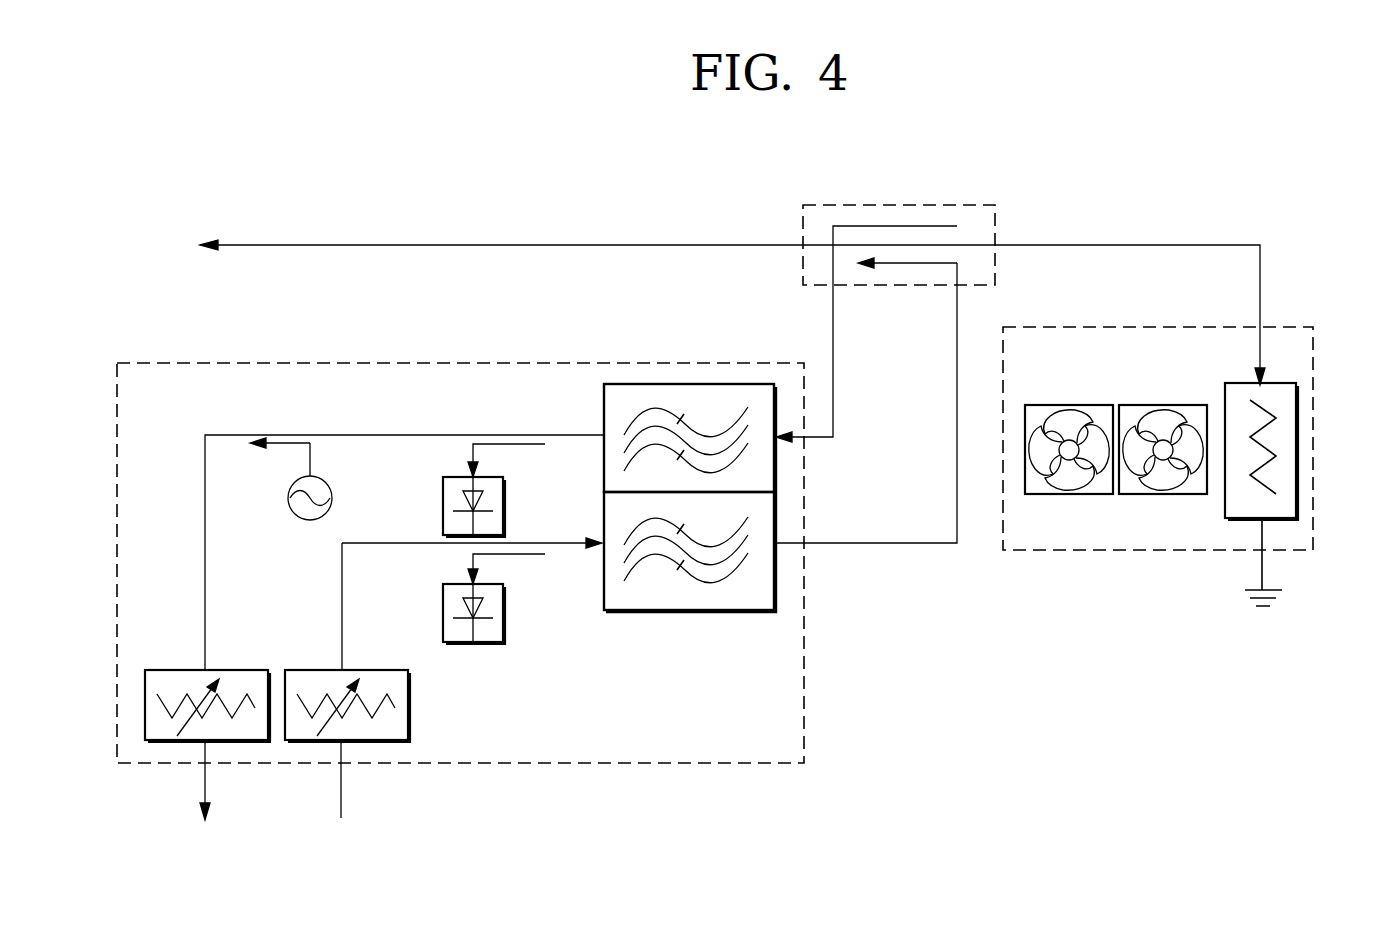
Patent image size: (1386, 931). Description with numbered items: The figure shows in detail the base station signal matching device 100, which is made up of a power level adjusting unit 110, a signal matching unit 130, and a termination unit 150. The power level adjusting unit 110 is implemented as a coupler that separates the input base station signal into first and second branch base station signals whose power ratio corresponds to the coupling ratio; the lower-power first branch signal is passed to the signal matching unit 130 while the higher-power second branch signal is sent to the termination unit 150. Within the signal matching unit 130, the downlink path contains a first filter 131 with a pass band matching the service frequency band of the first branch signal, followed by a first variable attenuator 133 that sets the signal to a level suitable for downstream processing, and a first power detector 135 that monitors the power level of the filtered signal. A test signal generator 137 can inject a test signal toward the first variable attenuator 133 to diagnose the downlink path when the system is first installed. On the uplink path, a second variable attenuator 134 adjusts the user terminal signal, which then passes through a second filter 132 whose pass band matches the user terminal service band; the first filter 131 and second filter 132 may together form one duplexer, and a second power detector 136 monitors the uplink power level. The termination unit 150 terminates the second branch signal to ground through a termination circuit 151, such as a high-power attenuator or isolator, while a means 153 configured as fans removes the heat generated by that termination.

The base station signal matching device 100 is at (1232, 200).
The power level adjusting unit 110 is at (960, 203).
The signal matching unit 130 is at (520, 362).
The first filter 131 is at (690, 384).
The second filter 132 is at (706, 612).
The first variable attenuator 133 is at (248, 668).
The second variable attenuator 134 is at (376, 668).
The first power detector 135 is at (505, 503).
The second power detector 136 is at (505, 610).
The test signal generator 137 is at (332, 491).
The termination unit 150 is at (1288, 327).
The termination circuit 151 is at (1297, 412).
The means for removing heat 153 is at (1133, 405).